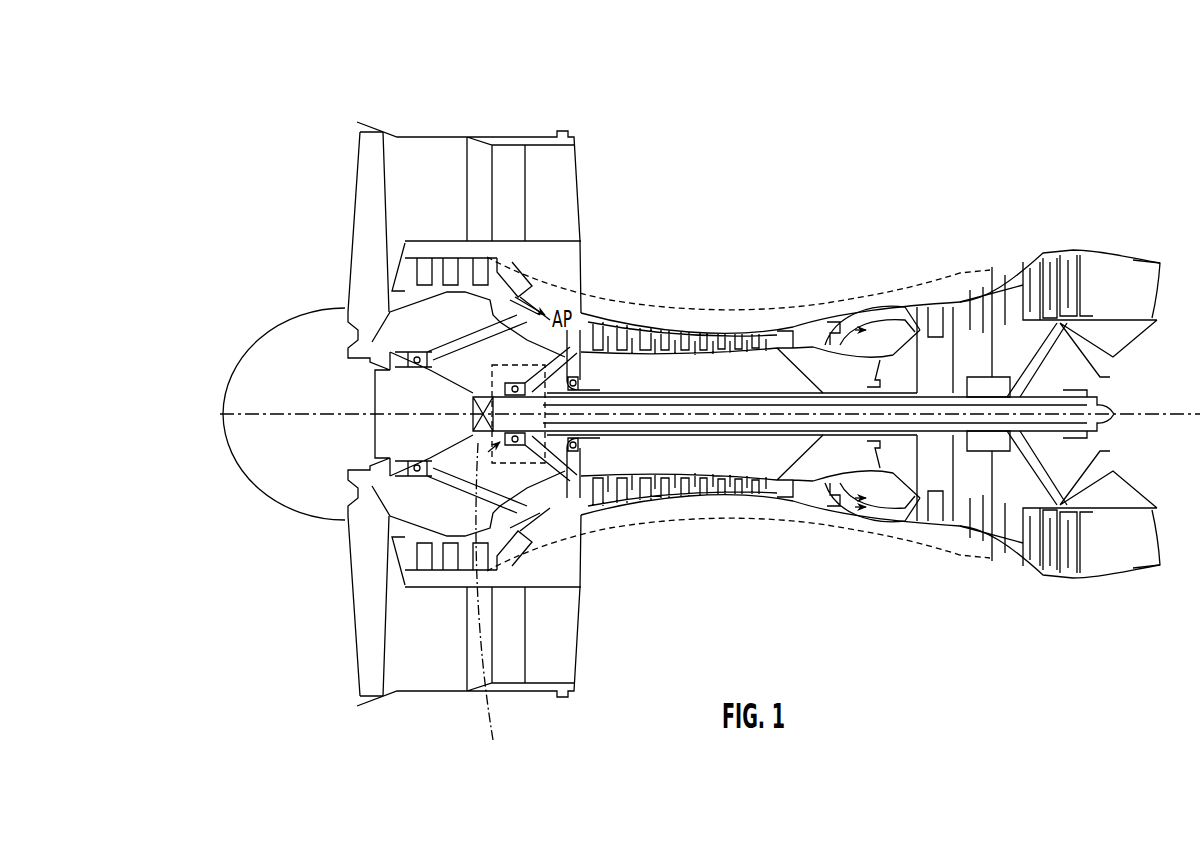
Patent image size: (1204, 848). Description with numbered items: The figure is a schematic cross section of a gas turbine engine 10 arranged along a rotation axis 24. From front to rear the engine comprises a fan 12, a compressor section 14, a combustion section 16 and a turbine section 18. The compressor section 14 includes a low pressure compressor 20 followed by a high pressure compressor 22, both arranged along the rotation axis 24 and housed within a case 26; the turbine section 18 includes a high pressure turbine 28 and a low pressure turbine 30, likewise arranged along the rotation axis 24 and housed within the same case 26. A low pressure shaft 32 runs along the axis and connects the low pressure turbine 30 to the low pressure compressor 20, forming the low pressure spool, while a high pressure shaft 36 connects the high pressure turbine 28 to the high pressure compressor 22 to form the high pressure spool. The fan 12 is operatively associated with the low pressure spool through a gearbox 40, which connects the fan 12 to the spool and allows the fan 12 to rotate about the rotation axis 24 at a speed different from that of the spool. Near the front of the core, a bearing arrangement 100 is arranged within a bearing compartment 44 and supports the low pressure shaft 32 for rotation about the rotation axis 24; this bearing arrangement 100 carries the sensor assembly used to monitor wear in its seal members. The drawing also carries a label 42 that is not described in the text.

The gas turbine engine 10 is at (338, 752).
The fan 12 is at (470, 62).
The compressor section 14 is at (698, 170).
The combustion section 16 is at (898, 205).
The turbine section 18 is at (1053, 160).
The low pressure compressor 20 is at (487, 257).
The high pressure compressor 22 is at (676, 320).
The rotation axis 24 is at (292, 418).
The case 26 is at (608, 300).
The high pressure turbine 28 is at (940, 307).
The low pressure turbine 30 is at (1060, 265).
The low pressure shaft 32 is at (720, 422).
The high pressure shaft 36 is at (880, 470).
The gearbox 40 is at (482, 399).
The fan case 42 is at (266, 84).
The bearing compartment 44 is at (520, 465).
The bearing arrangement 100 is at (497, 607).